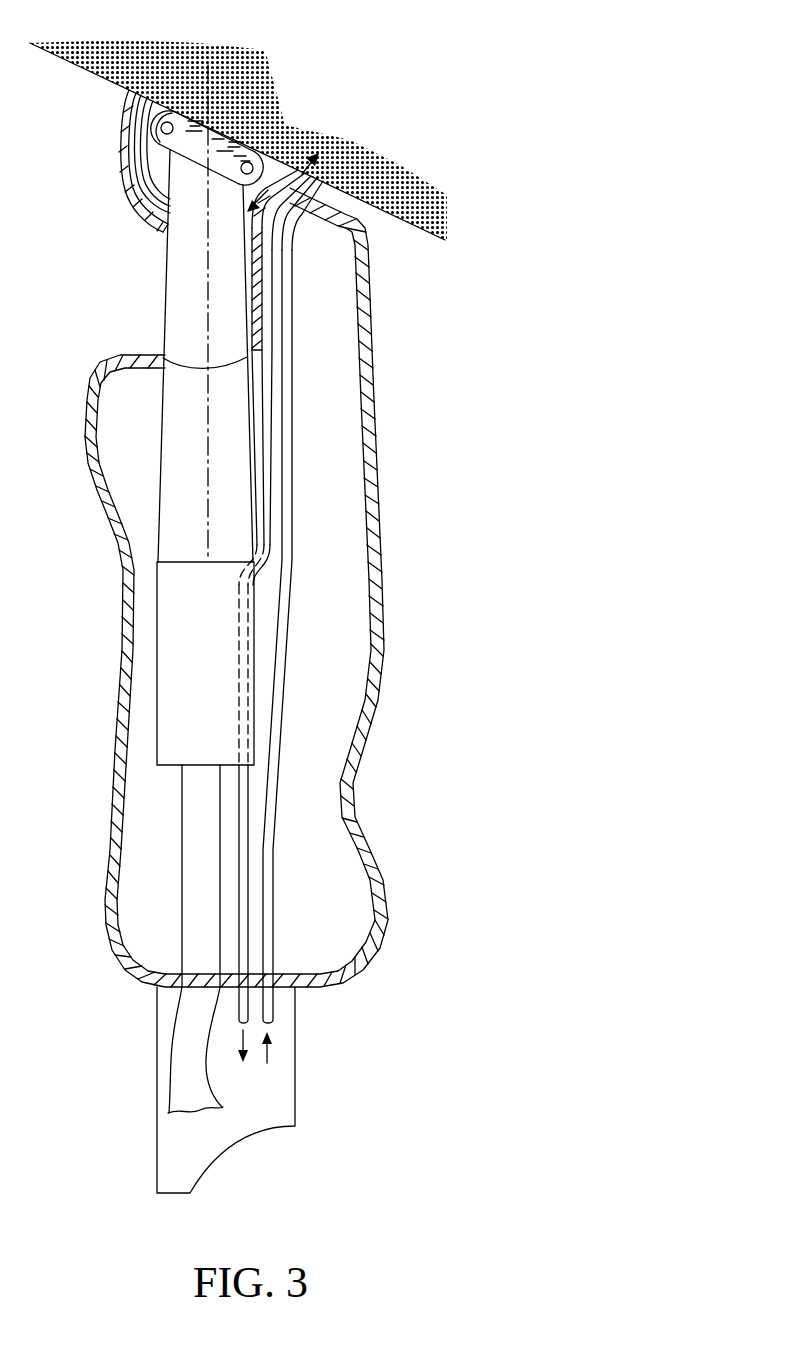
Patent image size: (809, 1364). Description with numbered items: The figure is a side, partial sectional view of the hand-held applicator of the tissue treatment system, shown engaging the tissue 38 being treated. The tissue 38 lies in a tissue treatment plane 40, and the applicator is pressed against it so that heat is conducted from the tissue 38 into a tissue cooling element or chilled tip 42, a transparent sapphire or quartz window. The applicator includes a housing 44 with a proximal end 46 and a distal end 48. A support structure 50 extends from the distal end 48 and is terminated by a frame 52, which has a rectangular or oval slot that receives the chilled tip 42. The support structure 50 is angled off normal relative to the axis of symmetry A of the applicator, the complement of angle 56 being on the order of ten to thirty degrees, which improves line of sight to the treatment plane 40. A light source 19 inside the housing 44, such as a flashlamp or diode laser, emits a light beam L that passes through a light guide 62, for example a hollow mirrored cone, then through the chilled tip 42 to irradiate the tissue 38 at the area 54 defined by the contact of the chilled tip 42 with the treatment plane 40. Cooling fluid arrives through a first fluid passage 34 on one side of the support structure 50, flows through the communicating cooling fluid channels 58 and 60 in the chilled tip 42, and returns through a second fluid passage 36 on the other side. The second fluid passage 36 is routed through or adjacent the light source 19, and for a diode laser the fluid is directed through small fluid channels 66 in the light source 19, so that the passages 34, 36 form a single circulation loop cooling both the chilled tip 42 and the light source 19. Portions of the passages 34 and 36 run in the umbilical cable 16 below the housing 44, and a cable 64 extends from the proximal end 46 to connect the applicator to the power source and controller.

The umbilical cable 16 is at (157, 1088).
The light source 19 is at (157, 700).
The first fluid passage 34 is at (293, 279).
The second fluid passage 36 is at (140, 183).
The tissue 38 is at (407, 198).
The tissue treatment plane 40 is at (437, 242).
The chilled tip 42 is at (201, 130).
The housing 44 is at (120, 775).
The proximal end 46 is at (99, 984).
The distal end 48 is at (112, 183).
The support structure 50 is at (166, 222).
The frame 52 is at (153, 126).
The area 54 is at (246, 142).
The angle 56 is at (300, 184).
The cooling fluid channel 58 is at (266, 158).
The cooling fluid channel 60 is at (163, 123).
The light guide 62 is at (170, 290).
The cable 64 is at (176, 1043).
The fluid channels 66 is at (238, 611).
The axis of symmetry A is at (210, 68).
The light beam L is at (208, 450).